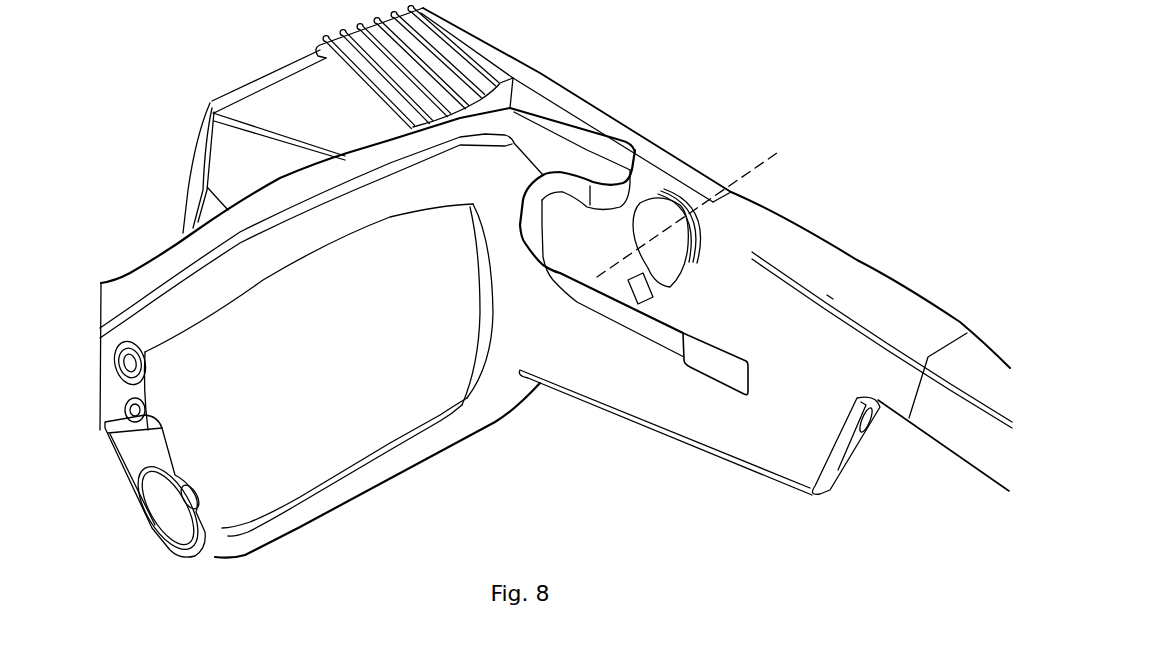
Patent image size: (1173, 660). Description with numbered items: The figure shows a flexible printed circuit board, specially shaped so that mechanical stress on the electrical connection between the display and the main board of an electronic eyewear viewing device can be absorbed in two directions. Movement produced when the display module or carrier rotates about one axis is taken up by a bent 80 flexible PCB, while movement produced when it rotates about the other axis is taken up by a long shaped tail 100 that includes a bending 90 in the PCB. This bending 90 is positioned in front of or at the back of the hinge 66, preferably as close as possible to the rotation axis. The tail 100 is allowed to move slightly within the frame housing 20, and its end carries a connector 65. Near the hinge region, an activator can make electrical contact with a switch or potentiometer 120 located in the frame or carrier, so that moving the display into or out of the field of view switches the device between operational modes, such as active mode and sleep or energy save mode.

The frame housing 20 is at (840, 260).
The connector 65 is at (700, 360).
The hinge 66 is at (672, 222).
The bent flexible PCB 80 is at (628, 149).
The bending 90 is at (533, 222).
The long shaped tail 100 is at (587, 308).
The switch or potentiometer 120 is at (644, 300).